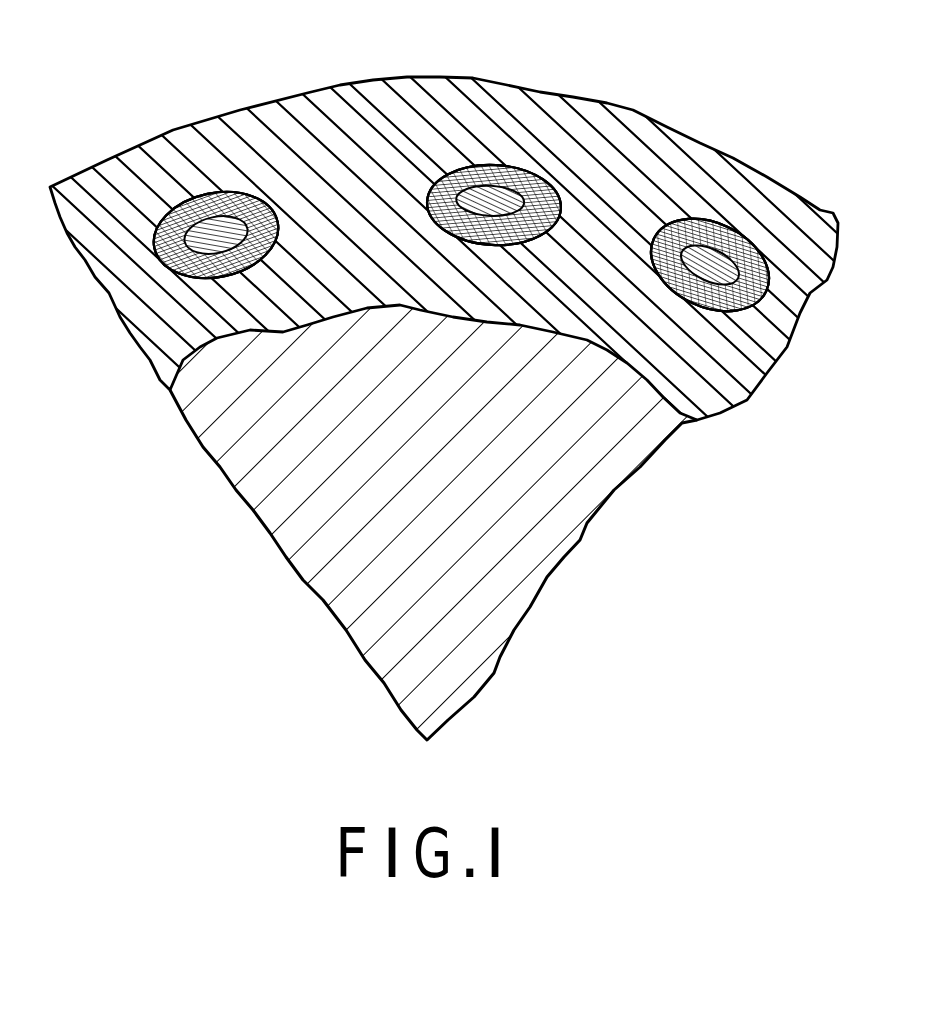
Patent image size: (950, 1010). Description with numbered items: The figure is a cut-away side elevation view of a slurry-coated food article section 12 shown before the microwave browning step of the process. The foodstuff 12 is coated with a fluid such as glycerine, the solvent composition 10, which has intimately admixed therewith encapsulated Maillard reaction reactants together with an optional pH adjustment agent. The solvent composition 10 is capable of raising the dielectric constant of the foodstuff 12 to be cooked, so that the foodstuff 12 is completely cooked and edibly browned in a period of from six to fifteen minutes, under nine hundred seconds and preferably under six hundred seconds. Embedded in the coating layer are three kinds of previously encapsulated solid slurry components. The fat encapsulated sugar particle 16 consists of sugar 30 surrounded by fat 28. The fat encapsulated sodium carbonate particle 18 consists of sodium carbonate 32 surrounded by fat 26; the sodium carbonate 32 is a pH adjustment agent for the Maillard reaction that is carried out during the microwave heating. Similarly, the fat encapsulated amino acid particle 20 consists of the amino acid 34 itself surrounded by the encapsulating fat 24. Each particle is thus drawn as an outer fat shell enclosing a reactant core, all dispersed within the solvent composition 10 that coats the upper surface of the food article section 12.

The solvent composition 10 is at (490, 92).
The slurry-coated food article section 12 is at (542, 543).
The fat encapsulated sugar particle 16 is at (178, 207).
The fat encapsulated sodium carbonate particle 18 is at (455, 167).
The fat encapsulated amino acid particle 20 is at (727, 217).
The fat 24 is at (757, 293).
The fat 26 is at (522, 246).
The fat 28 is at (157, 257).
The sugar 30 is at (225, 277).
The sodium carbonate 32 is at (460, 237).
The amino acid 34 is at (677, 295).